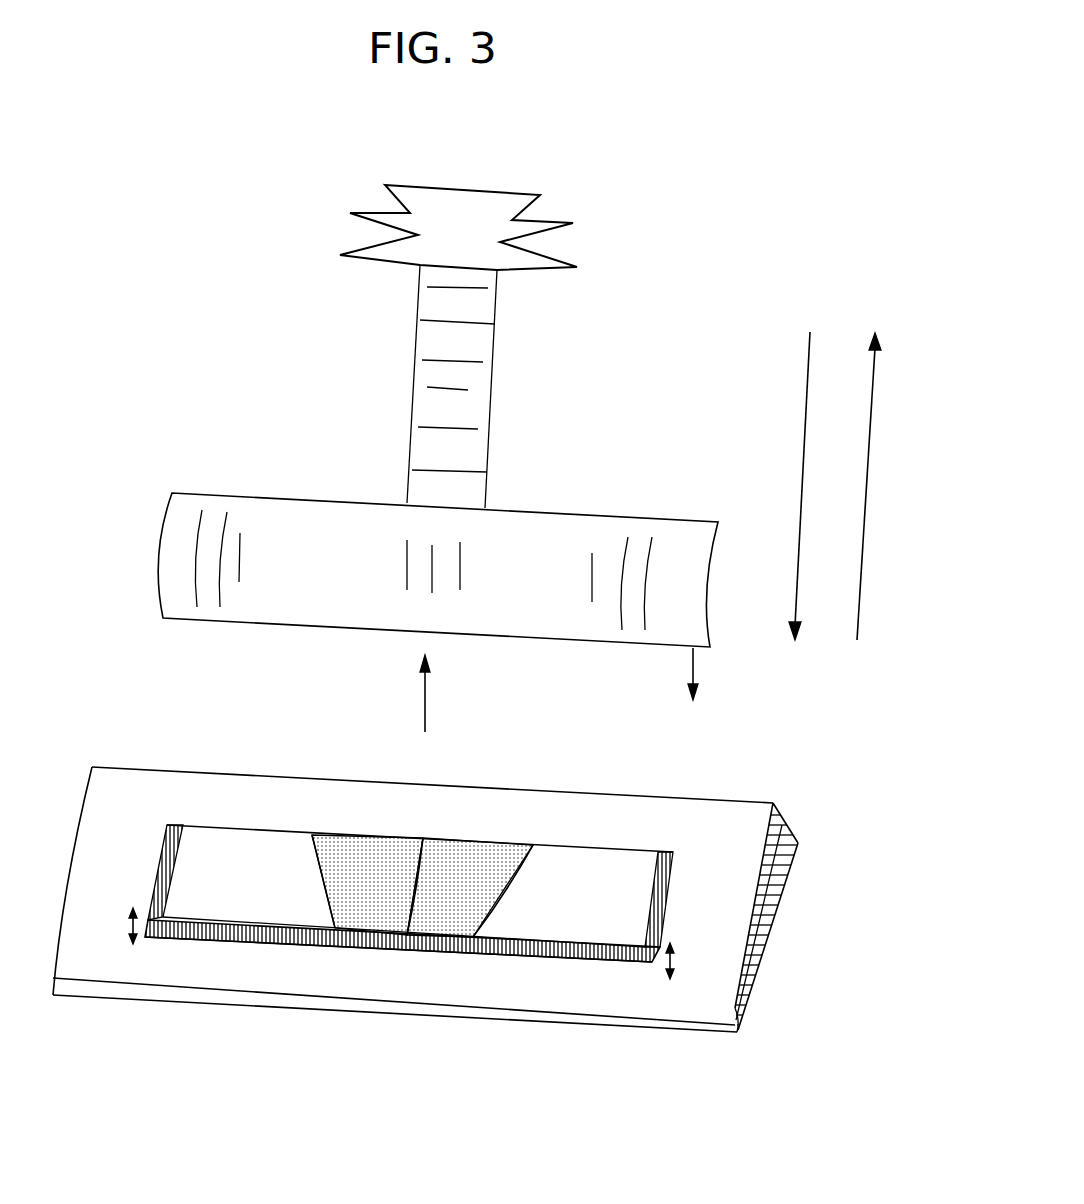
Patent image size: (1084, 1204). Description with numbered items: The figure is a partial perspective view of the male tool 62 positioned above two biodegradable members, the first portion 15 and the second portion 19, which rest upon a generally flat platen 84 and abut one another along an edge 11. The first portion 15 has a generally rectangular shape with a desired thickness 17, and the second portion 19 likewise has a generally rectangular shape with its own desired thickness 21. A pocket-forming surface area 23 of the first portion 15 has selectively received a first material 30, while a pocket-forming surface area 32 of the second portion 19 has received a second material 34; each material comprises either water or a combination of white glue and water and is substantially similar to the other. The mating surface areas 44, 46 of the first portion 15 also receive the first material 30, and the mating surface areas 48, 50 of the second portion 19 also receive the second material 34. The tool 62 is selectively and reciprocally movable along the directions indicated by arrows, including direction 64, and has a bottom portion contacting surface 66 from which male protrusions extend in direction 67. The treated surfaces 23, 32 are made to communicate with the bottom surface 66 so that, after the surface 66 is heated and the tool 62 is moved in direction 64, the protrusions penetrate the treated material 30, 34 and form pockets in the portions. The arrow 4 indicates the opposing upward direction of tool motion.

The upward direction arrow 4 is at (423, 707).
The edge 11 is at (423, 850).
The first portion 15 is at (232, 860).
The thickness 17 is at (125, 923).
The second portion 19 is at (617, 870).
The thickness 21 is at (677, 960).
The surface area 23 is at (350, 837).
The first material 30 is at (388, 899).
The surface area 32 is at (477, 845).
The second material 34 is at (472, 901).
The surface area 44 is at (162, 860).
The surface area 46 is at (317, 937).
The surface area 48 is at (513, 948).
The surface area 50 is at (658, 905).
The male tool 62 is at (490, 383).
The direction 64 is at (805, 425).
The portion contacting surface 66 is at (567, 640).
The direction 67 is at (695, 660).
The platen 84 is at (746, 853).